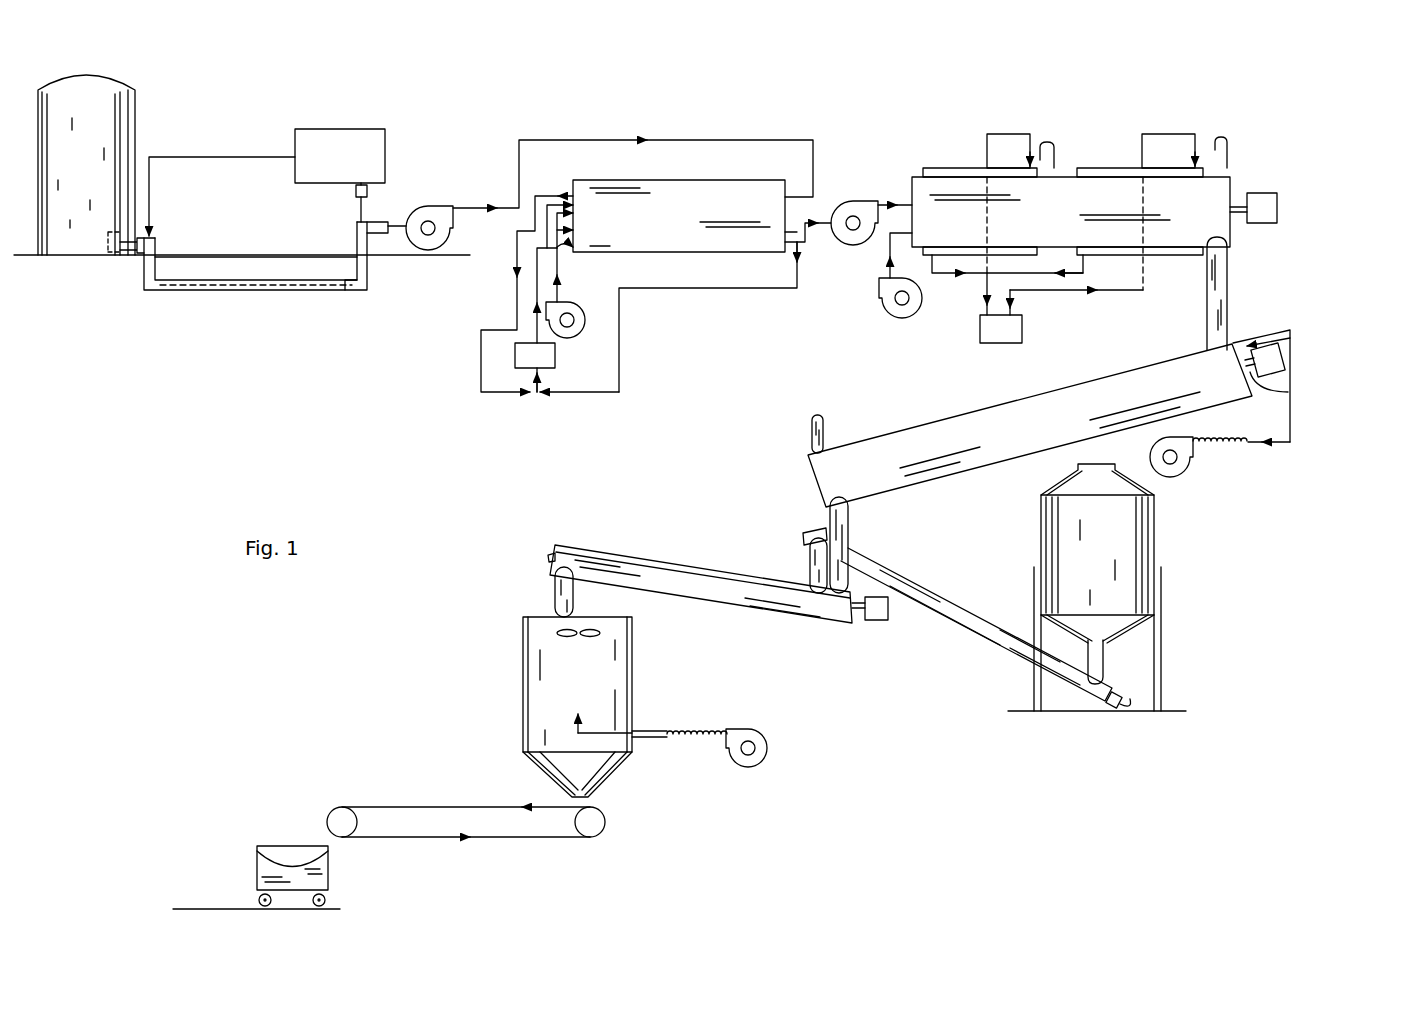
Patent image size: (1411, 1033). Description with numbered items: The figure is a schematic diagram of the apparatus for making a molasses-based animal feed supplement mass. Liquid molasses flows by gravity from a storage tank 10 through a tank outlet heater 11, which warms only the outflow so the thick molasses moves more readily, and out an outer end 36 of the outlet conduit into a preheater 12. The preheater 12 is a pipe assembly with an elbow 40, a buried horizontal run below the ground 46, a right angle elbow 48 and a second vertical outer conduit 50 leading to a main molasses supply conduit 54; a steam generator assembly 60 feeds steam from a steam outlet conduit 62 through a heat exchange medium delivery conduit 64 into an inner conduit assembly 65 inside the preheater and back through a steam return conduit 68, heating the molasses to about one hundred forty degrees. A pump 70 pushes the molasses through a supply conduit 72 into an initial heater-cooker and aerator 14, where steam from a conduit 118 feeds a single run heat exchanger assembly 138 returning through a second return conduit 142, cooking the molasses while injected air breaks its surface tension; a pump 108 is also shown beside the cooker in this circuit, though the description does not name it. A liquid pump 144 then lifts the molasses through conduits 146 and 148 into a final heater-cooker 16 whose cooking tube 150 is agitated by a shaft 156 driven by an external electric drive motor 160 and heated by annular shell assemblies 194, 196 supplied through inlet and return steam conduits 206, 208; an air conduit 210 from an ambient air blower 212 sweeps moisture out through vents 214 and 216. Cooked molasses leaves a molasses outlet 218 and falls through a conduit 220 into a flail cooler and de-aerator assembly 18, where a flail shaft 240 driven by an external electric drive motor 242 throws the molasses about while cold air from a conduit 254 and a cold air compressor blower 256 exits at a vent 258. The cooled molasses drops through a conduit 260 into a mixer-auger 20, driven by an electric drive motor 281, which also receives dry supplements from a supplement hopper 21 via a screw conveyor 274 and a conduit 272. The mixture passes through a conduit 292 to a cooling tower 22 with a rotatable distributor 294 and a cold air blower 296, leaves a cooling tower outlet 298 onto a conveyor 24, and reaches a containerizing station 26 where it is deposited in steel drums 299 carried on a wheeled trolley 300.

The storage tank 10 is at (63, 187).
The tank outlet heater 11 is at (100, 243).
The preheater 12 is at (233, 303).
The initial heater-cooker and aerator 14 is at (655, 230).
The final heater-cooker 16 is at (1049, 222).
The flail cooler and de-aerator assembly 18 is at (1010, 438).
The mixer-auger 20 is at (697, 592).
The supplement hopper 21 is at (1087, 580).
The cooling tower 22 is at (566, 696).
The conveyor 24 is at (412, 803).
The containerizing station 26 is at (227, 857).
The outer end of the tank outlet conduit 36 is at (149, 228).
The elbow 40 is at (206, 229).
The ground 46 is at (285, 229).
The right angle elbow 48 is at (358, 292).
The second vertical outer conduit 50 is at (368, 269).
The main molasses supply conduit 54 is at (397, 222).
The steam generator assembly 60 is at (322, 168).
The steam outlet conduit 62 is at (367, 197).
The heat exchange medium delivery conduit 64 is at (370, 198).
The inner conduit assembly 65 is at (287, 290).
The steam return conduit 68 is at (223, 158).
The pump 70 is at (453, 229).
The supply conduit 72 is at (722, 140).
The circulation pump 108 is at (571, 300).
The conduit 118 is at (535, 256).
The single run heat exchanger assembly 138 is at (515, 295).
The second return conduit 142 is at (757, 290).
The liquid pump 144 is at (848, 202).
The conduit 146 is at (823, 240).
The conduit 148 is at (907, 203).
The cooking tube 150 is at (1062, 170).
The shaft 156 is at (1240, 200).
The external electric drive motor 160 is at (1279, 208).
The annular shell assembly 194 is at (968, 168).
The annular shell assembly 196 is at (1093, 167).
The inlet steam conduit 206 is at (1010, 133).
The return steam conduit 208 is at (1086, 271).
The air conduit 210 is at (888, 266).
The ambient air blower 212 is at (914, 320).
The vent 214 is at (1050, 140).
The vent 216 is at (1223, 137).
The molasses outlet 218 is at (1228, 252).
The conduit 220 is at (1229, 291).
The flail shaft 240 is at (1291, 386).
The external electric drive motor 242 is at (1284, 353).
The conduit 254 is at (1291, 420).
The cold air compressor blower 256 is at (1188, 462).
The vent 258 is at (825, 427).
The conduit 260 is at (849, 531).
The conduit 272 is at (808, 555).
The screw conveyor 274 is at (915, 578).
The electric drive motor 281 is at (892, 610).
The conduit 292 is at (574, 602).
The rotatable distributor 294 is at (557, 634).
The cold air blower 296 is at (768, 750).
The cooling tower outlet 298 is at (602, 784).
The steel drums 299 is at (308, 854).
The wheeled trolley 300 is at (316, 885).